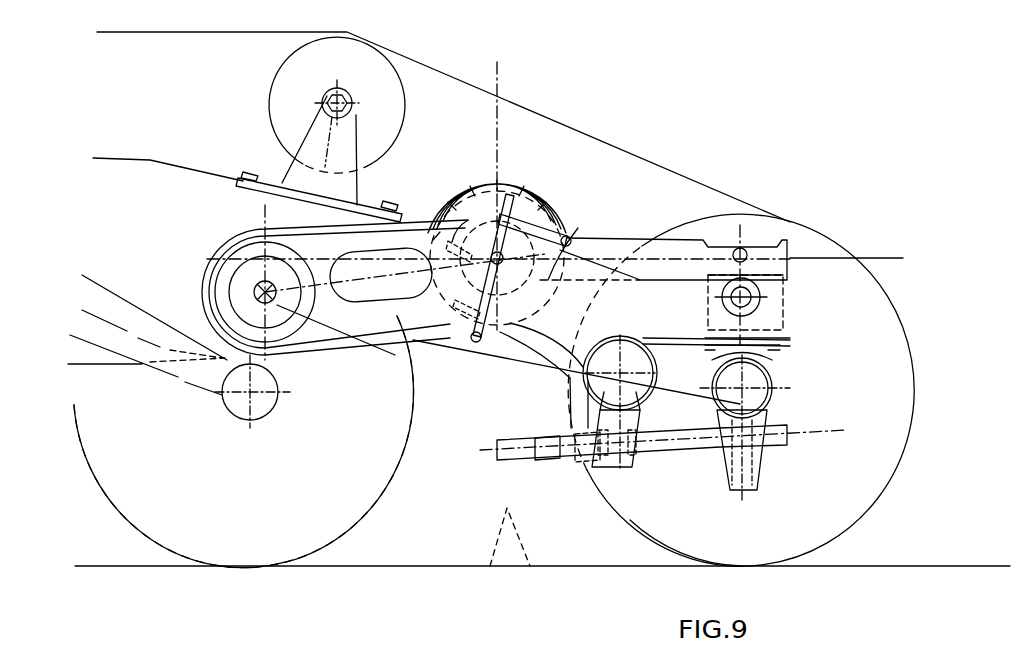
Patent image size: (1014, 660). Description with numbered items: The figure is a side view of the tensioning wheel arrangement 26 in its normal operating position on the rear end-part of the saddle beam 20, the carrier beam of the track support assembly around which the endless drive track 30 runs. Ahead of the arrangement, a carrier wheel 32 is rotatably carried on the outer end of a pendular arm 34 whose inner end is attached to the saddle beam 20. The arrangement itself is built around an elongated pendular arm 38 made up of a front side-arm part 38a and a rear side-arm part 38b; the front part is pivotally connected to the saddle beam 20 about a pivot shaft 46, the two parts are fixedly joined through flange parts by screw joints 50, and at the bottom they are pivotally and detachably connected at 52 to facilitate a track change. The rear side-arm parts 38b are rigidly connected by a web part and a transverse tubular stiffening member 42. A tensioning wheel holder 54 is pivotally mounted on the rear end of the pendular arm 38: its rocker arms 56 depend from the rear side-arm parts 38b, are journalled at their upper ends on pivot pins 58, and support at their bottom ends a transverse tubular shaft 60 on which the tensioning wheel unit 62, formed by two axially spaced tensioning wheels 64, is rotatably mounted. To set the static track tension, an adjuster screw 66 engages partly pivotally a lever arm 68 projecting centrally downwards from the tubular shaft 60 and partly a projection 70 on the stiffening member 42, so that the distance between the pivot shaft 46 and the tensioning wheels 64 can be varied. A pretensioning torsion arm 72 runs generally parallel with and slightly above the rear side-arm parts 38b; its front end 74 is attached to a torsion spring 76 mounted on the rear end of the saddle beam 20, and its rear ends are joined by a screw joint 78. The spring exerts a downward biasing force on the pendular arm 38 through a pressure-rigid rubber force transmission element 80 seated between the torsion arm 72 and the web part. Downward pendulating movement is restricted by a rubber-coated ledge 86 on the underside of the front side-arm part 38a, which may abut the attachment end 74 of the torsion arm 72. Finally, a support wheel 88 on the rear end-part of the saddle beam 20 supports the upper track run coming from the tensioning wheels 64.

The saddle beam 20 is at (175, 200).
The tensioning wheel arrangement 26 is at (556, 138).
The drive track 30 is at (608, 567).
The carrier wheel 32 is at (135, 486).
The pendular arm 34 is at (152, 330).
The pendular arm 38 is at (432, 218).
The front side-arm part 38a is at (336, 346).
The rear side-arm part 38b is at (544, 375).
The transverse tubular stiffening member 42 is at (598, 340).
The pivot shaft 46 is at (272, 298).
The screw joint 50 is at (544, 224).
The pivotal detachable connection 52 is at (470, 345).
The tensioning wheel holder 54 is at (718, 352).
The rocker arm 56 is at (770, 355).
The pivot pin 58 is at (762, 295).
The transverse tubular shaft 60 is at (772, 390).
The tensioning wheel unit 62 is at (854, 234).
The tensioning wheel 64 is at (826, 525).
The adjuster screw 66 is at (662, 456).
The lever arm 68 is at (758, 455).
The projection 70 is at (598, 470).
The torsion arm 72 is at (612, 245).
The front end of torsion arm 74 is at (513, 203).
The torsion spring 76 is at (575, 241).
The screw joint 78 is at (746, 250).
The force transmission element 80 is at (722, 306).
The ledge 86 is at (476, 198).
The support wheel 88 is at (290, 92).